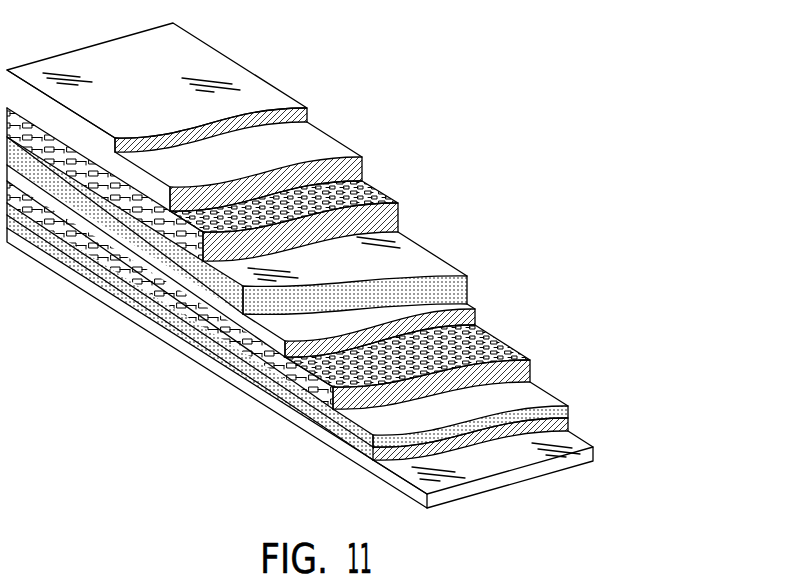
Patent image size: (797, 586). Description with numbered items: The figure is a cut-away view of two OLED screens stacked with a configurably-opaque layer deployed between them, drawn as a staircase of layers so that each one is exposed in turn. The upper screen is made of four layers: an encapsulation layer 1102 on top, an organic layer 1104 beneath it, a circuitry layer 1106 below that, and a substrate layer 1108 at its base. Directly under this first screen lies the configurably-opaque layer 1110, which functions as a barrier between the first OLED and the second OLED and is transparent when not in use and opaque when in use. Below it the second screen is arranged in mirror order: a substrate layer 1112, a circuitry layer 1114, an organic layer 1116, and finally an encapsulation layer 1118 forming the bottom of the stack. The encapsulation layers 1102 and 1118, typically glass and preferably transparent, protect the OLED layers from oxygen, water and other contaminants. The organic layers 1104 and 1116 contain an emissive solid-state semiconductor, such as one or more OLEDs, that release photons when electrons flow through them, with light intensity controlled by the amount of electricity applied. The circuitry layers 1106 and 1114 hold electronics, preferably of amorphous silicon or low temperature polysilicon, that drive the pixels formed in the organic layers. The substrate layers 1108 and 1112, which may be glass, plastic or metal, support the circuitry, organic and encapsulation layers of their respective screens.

The encapsulation layer 1102 is at (257, 90).
The organic layer 1104 is at (317, 141).
The circuitry layer 1106 is at (380, 191).
The substrate layer 1108 is at (403, 241).
The configurably-opaque layer 1110 is at (437, 279).
The substrate layer 1112 is at (471, 310).
The circuitry layer 1114 is at (492, 349).
The organic layer 1116 is at (527, 393).
The encapsulation layer 1118 is at (577, 442).